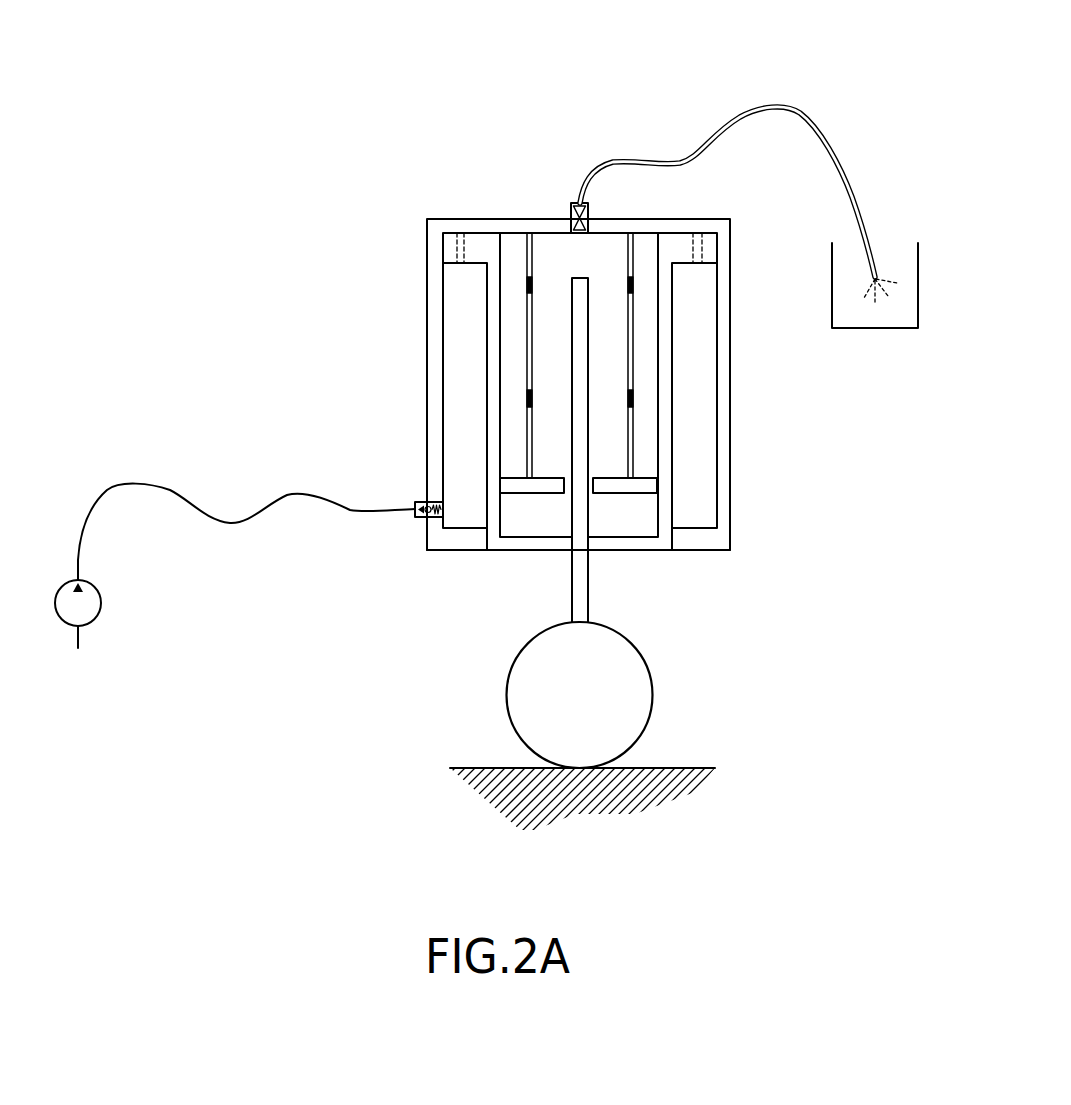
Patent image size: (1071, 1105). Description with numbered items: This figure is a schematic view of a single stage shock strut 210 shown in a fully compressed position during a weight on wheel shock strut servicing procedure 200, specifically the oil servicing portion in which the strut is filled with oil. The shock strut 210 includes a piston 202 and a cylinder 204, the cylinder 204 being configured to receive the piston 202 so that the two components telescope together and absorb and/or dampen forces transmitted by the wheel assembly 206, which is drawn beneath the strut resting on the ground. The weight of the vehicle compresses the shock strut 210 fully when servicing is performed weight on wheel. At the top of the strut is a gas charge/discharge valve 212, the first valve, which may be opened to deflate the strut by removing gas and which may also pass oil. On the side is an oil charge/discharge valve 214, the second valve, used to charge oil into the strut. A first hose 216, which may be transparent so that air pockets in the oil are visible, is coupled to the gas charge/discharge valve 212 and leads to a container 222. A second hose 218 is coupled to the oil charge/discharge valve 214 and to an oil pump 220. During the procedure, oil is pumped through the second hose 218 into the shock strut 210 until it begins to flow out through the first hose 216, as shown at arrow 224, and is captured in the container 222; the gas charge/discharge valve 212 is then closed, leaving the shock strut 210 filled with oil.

The weight on wheel shock strut servicing procedure 200 is at (832, 64).
The piston 202 is at (673, 462).
The cylinder 204 is at (730, 416).
The wheel assembly 206 is at (686, 659).
The shock strut 210 is at (730, 538).
The gas charge/discharge valve 212 is at (570, 208).
The oil charge/discharge valve 214 is at (418, 522).
The first hose 216 is at (735, 118).
The second hose 218 is at (168, 488).
The oil pump 220 is at (99, 613).
The container 222 is at (875, 329).
The arrow 224 is at (895, 242).